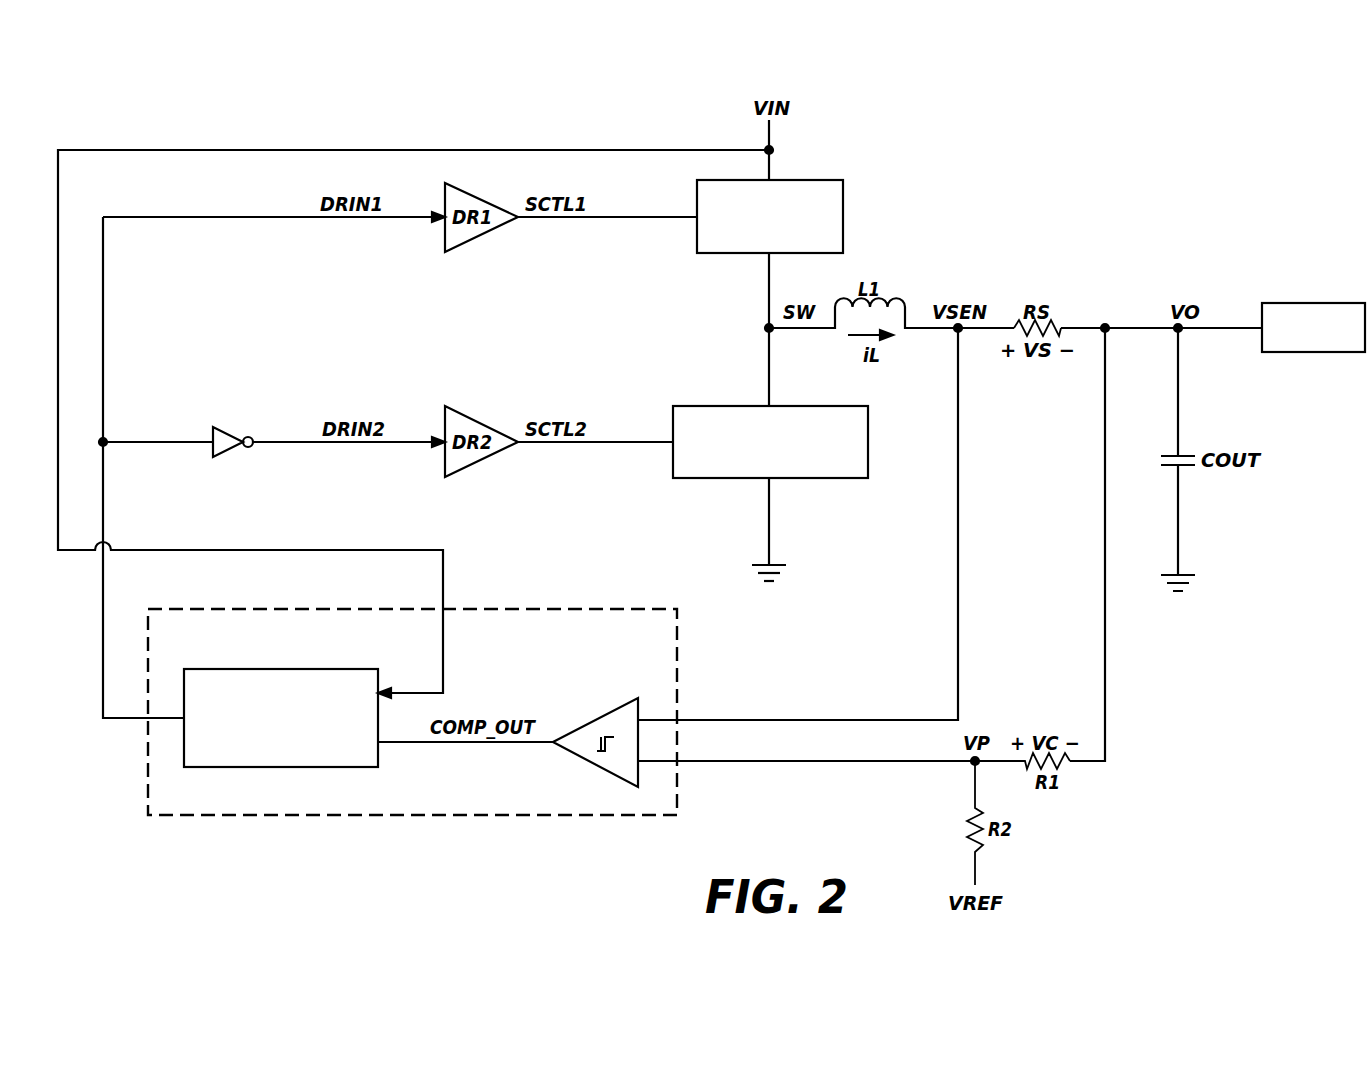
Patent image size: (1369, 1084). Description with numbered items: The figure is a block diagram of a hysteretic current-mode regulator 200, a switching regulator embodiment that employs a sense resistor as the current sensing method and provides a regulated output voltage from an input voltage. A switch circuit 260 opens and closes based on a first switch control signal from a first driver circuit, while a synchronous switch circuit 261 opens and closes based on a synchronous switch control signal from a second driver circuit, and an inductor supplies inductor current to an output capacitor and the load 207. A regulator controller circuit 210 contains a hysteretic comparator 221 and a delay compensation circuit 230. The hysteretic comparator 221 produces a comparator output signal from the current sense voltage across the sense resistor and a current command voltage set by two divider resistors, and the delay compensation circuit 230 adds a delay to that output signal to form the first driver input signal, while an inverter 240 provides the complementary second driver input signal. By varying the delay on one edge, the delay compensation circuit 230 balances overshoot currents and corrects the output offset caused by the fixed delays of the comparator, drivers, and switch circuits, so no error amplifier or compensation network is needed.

The hysteretic current-mode regulator 200 is at (1226, 146).
The load 207 is at (1313, 303).
The regulator controller circuit 210 is at (613, 608).
The hysteretic comparator 221 is at (596, 720).
The delay compensation circuit 230 is at (337, 669).
The inverter 240 is at (226, 430).
The switch circuit 260 is at (810, 180).
The synchronous switch circuit 261 is at (842, 478).